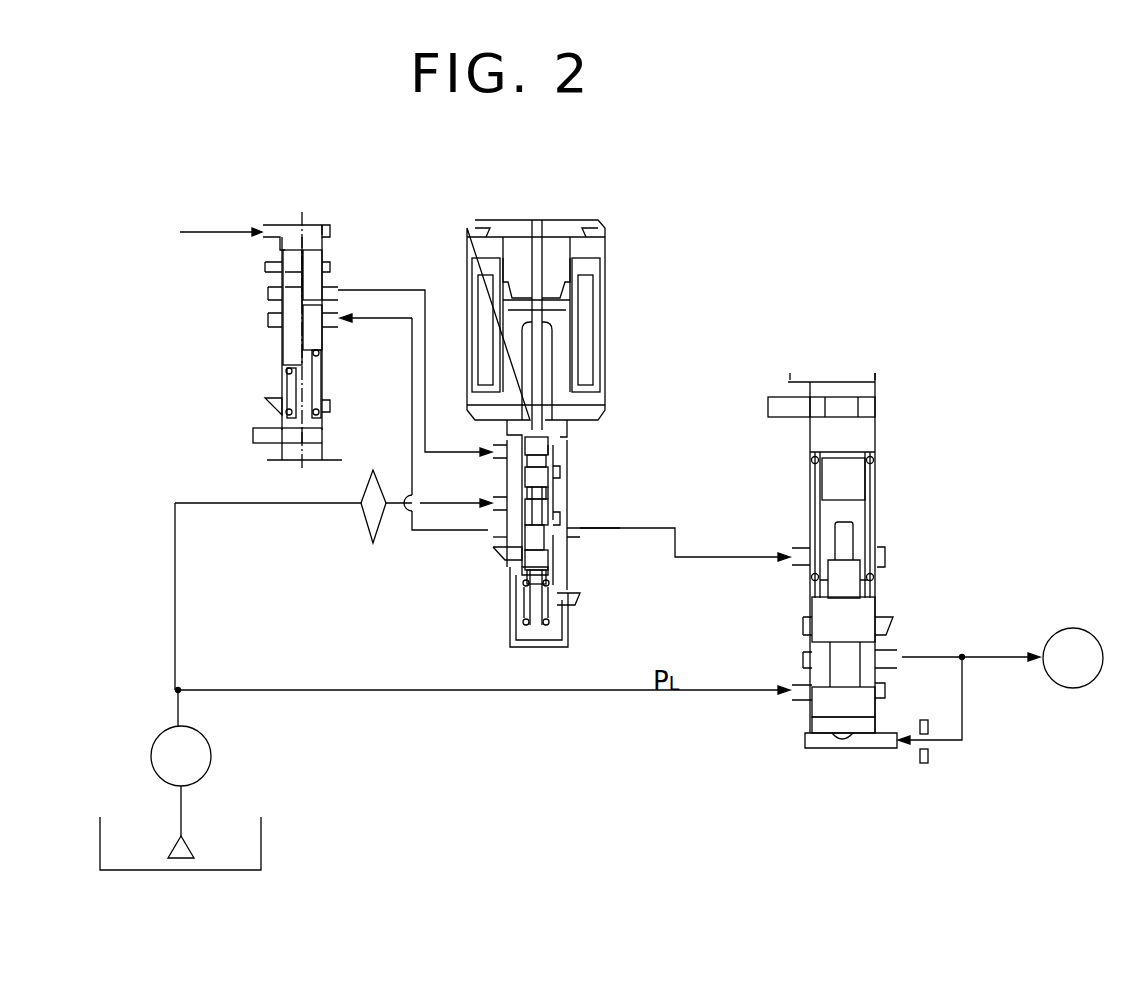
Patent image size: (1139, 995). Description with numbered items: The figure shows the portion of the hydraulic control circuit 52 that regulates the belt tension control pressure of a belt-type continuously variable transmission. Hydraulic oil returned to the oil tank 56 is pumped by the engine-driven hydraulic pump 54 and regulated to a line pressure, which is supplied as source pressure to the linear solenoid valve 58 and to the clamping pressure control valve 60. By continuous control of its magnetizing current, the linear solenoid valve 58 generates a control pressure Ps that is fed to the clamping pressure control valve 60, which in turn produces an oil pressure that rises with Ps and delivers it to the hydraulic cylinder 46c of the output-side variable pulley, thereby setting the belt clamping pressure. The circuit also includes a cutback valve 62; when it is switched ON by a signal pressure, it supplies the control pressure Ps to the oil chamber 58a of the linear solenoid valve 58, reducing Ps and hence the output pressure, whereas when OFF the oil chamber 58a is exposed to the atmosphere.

The cutback valve 62 is at (334, 185).
The linear solenoid valve 58 is at (590, 195).
The oil chamber 58a is at (560, 450).
The hydraulic control circuit 52 is at (902, 275).
The clamping pressure control valve 60 is at (872, 355).
The hydraulic cylinder 46c is at (1058, 645).
The hydraulic pump 54 is at (152, 748).
The oil tank 56 is at (262, 835).